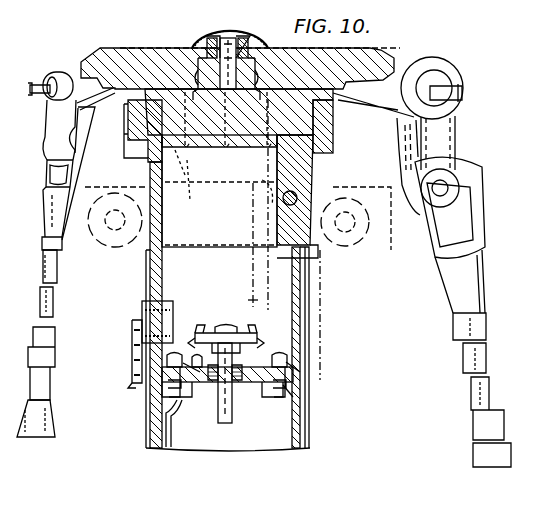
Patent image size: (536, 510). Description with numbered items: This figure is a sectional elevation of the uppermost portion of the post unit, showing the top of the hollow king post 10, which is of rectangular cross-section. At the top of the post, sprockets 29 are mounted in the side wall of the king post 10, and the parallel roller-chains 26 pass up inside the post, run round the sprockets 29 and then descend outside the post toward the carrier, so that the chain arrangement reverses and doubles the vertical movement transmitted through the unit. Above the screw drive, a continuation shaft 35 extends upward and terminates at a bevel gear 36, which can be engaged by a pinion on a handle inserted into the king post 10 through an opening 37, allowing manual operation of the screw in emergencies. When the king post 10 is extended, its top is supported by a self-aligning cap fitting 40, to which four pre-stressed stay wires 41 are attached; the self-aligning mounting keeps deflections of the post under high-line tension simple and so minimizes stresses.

The king post 10 is at (152, 270).
The parallel roller-chains 26 is at (250, 299).
The sprockets 29 is at (253, 212).
The continuation shaft 35 is at (219, 409).
The bevel gear 36 is at (202, 334).
The opening 37 is at (176, 322).
The self-aligning cap fitting 40 is at (168, 52).
The pre-stressed stay wires 41 is at (56, 303).